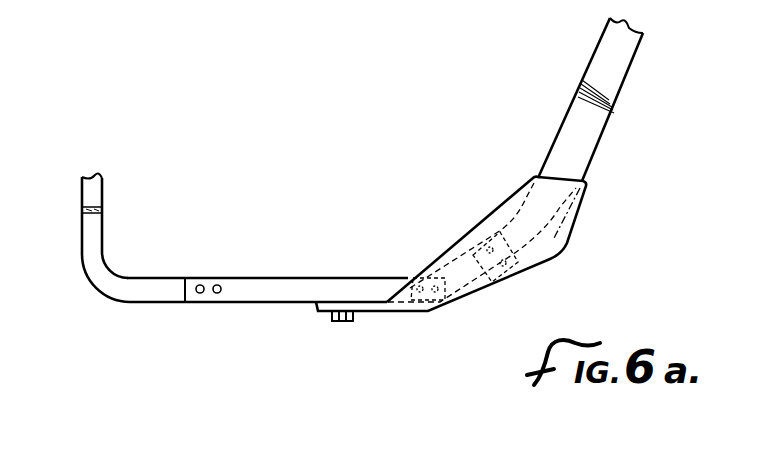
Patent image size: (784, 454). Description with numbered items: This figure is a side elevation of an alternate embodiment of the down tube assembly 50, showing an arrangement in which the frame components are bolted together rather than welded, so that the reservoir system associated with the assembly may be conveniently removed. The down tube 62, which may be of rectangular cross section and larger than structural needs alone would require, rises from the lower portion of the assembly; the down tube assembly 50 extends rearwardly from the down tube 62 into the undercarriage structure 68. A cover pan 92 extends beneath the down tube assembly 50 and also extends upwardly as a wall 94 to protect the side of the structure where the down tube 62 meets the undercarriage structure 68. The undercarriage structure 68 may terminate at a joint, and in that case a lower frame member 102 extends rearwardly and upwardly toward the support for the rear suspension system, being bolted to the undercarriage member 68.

The down tube assembly 50 is at (612, 172).
The down tube 62 is at (625, 72).
The undercarriage structure 68 is at (272, 293).
The cover pan 92 is at (567, 245).
The wall 94 is at (492, 213).
The lower frame member 102 is at (107, 283).